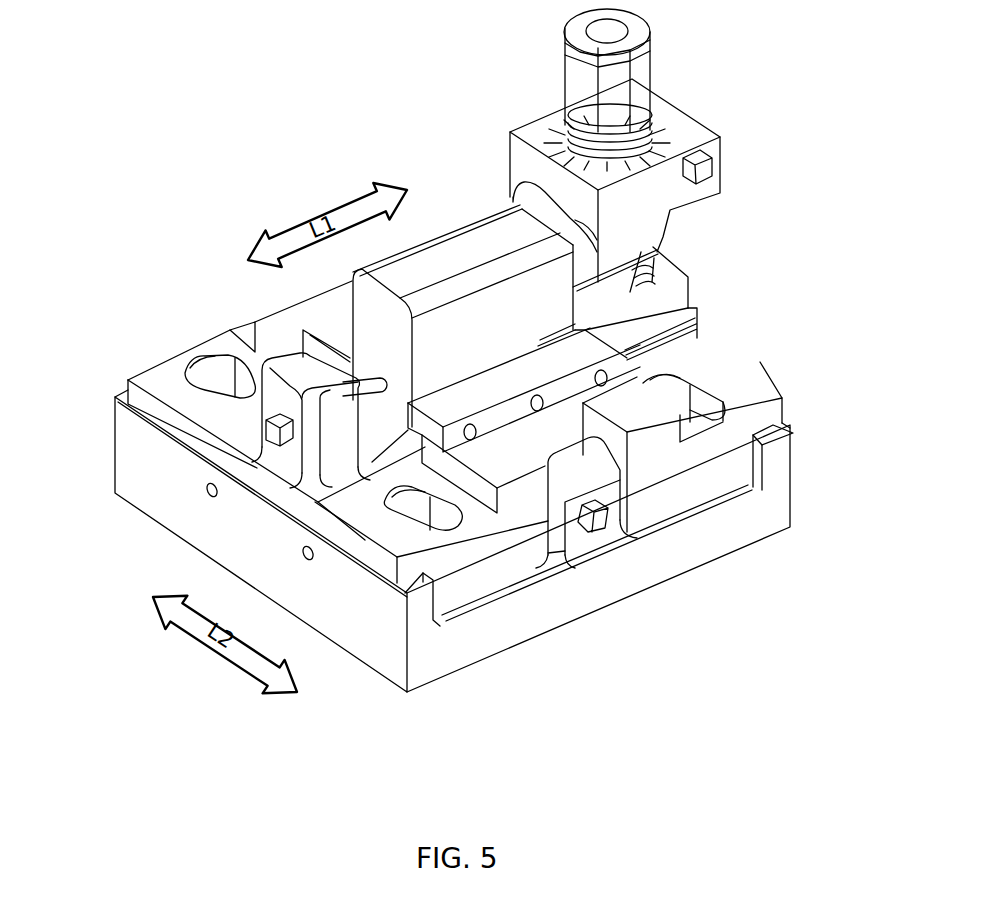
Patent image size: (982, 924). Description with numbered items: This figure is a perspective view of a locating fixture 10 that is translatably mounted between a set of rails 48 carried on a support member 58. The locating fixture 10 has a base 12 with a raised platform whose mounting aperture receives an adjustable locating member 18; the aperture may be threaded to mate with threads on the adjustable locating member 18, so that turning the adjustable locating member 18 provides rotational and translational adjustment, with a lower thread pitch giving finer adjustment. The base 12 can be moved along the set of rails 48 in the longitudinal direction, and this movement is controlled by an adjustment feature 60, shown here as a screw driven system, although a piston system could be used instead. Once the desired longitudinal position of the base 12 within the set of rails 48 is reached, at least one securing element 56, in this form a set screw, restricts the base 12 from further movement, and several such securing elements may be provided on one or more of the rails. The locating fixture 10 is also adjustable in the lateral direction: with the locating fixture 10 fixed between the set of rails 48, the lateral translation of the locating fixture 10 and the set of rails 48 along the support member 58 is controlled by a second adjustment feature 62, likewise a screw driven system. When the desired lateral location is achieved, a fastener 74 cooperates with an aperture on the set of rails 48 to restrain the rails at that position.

The locating fixture 10 is at (712, 52).
The base 12 is at (677, 302).
The adjustable locating member 18 is at (580, 82).
The set of rails 48 is at (700, 325).
The securing element 56 is at (615, 373).
The support member 58 is at (140, 483).
The adjustment feature 60 is at (170, 378).
The adjustment feature 62 is at (595, 522).
The fastener 74 is at (702, 407).